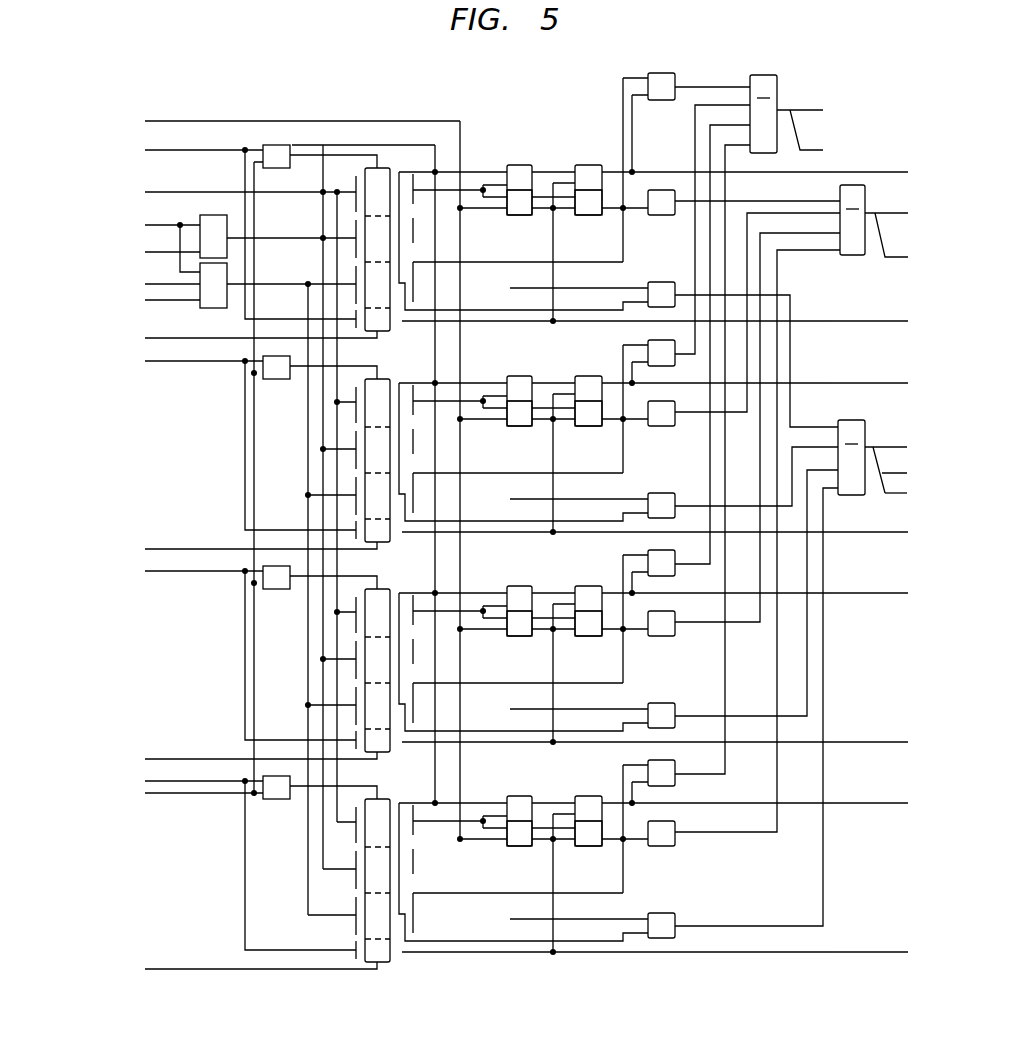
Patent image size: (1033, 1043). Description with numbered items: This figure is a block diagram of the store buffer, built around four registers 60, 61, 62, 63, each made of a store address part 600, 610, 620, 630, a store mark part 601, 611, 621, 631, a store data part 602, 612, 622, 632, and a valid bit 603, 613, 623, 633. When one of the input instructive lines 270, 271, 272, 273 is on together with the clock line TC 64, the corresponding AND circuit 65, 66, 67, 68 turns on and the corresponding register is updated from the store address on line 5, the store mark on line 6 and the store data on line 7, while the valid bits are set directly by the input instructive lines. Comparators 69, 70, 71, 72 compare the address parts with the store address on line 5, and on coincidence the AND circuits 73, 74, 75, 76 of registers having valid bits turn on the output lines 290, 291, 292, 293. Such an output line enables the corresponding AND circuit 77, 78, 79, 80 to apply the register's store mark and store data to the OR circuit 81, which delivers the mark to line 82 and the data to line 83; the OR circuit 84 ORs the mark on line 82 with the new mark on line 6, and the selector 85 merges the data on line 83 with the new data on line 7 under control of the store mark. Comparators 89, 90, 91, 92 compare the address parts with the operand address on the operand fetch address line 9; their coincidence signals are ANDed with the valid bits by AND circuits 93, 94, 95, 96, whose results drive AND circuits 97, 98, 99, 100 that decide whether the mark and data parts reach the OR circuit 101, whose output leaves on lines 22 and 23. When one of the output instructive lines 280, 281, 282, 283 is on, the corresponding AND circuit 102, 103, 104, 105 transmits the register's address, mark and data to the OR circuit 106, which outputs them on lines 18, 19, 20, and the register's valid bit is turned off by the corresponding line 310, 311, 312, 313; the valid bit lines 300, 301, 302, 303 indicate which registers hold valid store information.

The line 5 is at (175, 192).
The line 6 is at (172, 225).
The line 7 is at (172, 284).
The operand fetch address line 9 is at (182, 120).
The output line 18 is at (878, 447).
The output line 19 is at (892, 470).
The output line 20 is at (898, 483).
The line 22 is at (884, 218).
The line 23 is at (886, 262).
The register 60 is at (389, 168).
The register 61 is at (389, 379).
The register 62 is at (389, 589).
The register 63 is at (389, 799).
The clock line TC 64 is at (180, 795).
The AND circuit 65 is at (285, 148).
The AND circuit 66 is at (266, 380).
The AND circuit 67 is at (266, 590).
The AND circuit 68 is at (266, 800).
The comparator 69 is at (518, 165).
The comparator 70 is at (518, 376).
The comparator 71 is at (518, 586).
The comparator 72 is at (518, 796).
The AND circuit 73 is at (588, 165).
The AND circuit 74 is at (588, 376).
The AND circuit 75 is at (588, 586).
The AND circuit 76 is at (588, 796).
The AND circuit 77 is at (651, 73).
The AND circuit 78 is at (650, 340).
The AND circuit 79 is at (668, 550).
The AND circuit 80 is at (674, 760).
The OR circuit 81 is at (755, 75).
The line 82 is at (182, 252).
The line 83 is at (178, 300).
The OR circuit 84 is at (207, 216).
The selector 85 is at (213, 308).
The comparator 89 is at (522, 215).
The comparator 90 is at (522, 426).
The comparator 91 is at (522, 636).
The comparator 92 is at (522, 846).
The AND circuit 93 is at (591, 215).
The AND circuit 94 is at (591, 426).
The AND circuit 95 is at (591, 636).
The AND circuit 96 is at (591, 846).
The AND circuit 97 is at (662, 190).
The AND circuit 98 is at (652, 426).
The AND circuit 99 is at (652, 636).
The AND circuit 100 is at (654, 846).
The OR circuit 101 is at (856, 185).
The AND circuit 102 is at (662, 282).
The AND circuit 103 is at (662, 493).
The AND circuit 104 is at (662, 703).
The AND circuit 105 is at (662, 913).
The OR circuit 106 is at (858, 414).
The input instructive line 270 is at (195, 150).
The input instructive line 271 is at (188, 363).
The input instructive line 272 is at (186, 572).
The input instructive line 273 is at (202, 782).
The output instructive line 280 is at (551, 288).
The output instructive line 281 is at (551, 499).
The output instructive line 282 is at (551, 709).
The output instructive line 283 is at (551, 919).
The output line 290 is at (860, 172).
The output line 291 is at (860, 383).
The output line 292 is at (885, 588).
The output line 293 is at (860, 803).
The valid bit line 300 is at (860, 321).
The valid bit line 301 is at (866, 532).
The valid bit line 302 is at (860, 742).
The valid bit line 303 is at (858, 952).
The line 310 is at (152, 340).
The line 311 is at (188, 549).
The line 312 is at (188, 759).
The line 313 is at (188, 969).
The store address part 600 is at (365, 212).
The store mark part 601 is at (365, 257).
The store data part 602 is at (365, 302).
The valid bit 603 is at (390, 331).
The store address part 610 is at (365, 420).
The store mark part 611 is at (365, 466).
The store data part 612 is at (365, 512).
The valid bit 613 is at (390, 542).
The store address part 620 is at (365, 630).
The store mark part 621 is at (365, 676).
The store data part 622 is at (365, 722).
The valid bit 623 is at (390, 752).
The store address part 630 is at (365, 840).
The store mark part 631 is at (365, 886).
The store data part 632 is at (365, 932).
The valid bit 633 is at (390, 962).